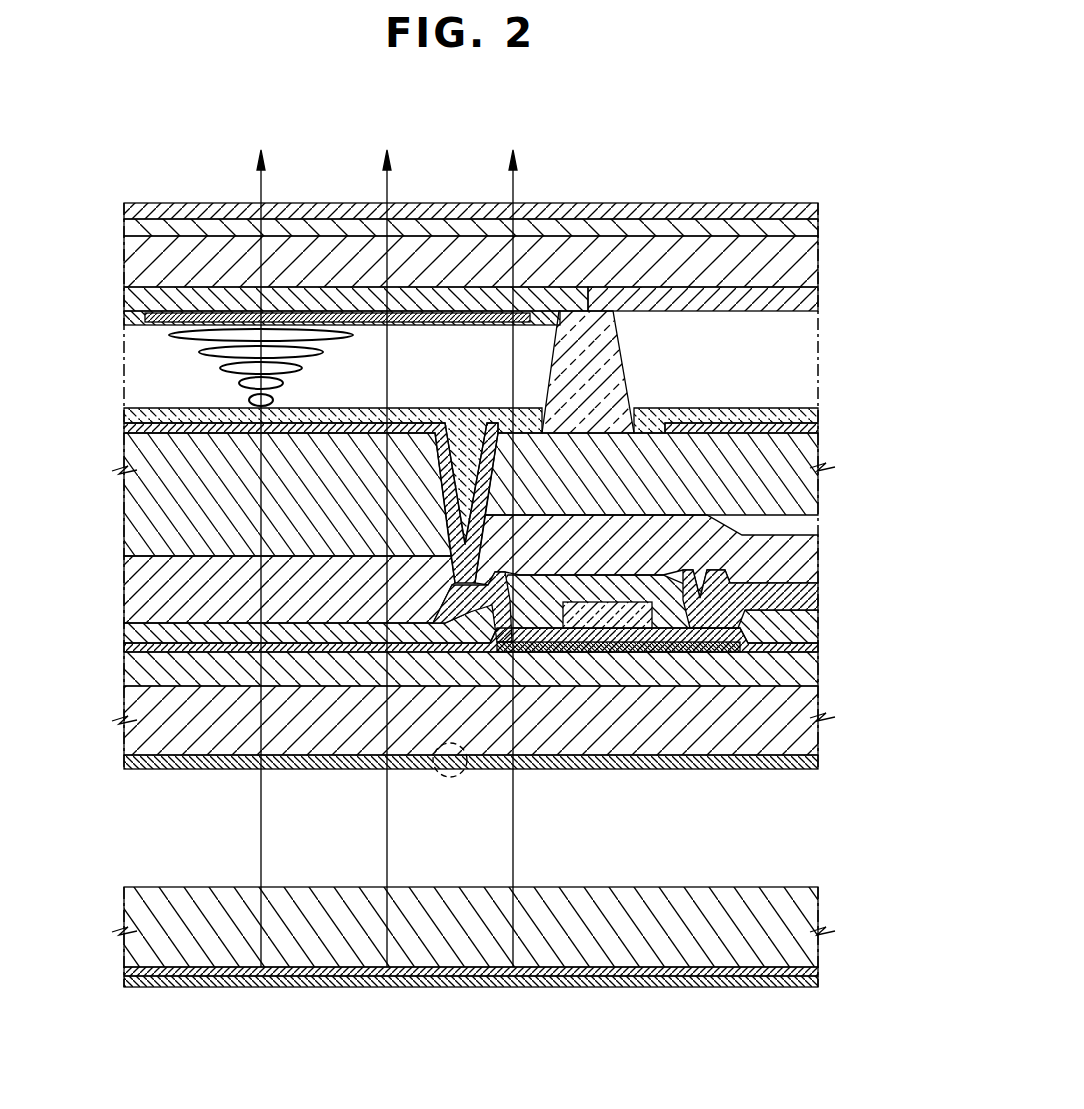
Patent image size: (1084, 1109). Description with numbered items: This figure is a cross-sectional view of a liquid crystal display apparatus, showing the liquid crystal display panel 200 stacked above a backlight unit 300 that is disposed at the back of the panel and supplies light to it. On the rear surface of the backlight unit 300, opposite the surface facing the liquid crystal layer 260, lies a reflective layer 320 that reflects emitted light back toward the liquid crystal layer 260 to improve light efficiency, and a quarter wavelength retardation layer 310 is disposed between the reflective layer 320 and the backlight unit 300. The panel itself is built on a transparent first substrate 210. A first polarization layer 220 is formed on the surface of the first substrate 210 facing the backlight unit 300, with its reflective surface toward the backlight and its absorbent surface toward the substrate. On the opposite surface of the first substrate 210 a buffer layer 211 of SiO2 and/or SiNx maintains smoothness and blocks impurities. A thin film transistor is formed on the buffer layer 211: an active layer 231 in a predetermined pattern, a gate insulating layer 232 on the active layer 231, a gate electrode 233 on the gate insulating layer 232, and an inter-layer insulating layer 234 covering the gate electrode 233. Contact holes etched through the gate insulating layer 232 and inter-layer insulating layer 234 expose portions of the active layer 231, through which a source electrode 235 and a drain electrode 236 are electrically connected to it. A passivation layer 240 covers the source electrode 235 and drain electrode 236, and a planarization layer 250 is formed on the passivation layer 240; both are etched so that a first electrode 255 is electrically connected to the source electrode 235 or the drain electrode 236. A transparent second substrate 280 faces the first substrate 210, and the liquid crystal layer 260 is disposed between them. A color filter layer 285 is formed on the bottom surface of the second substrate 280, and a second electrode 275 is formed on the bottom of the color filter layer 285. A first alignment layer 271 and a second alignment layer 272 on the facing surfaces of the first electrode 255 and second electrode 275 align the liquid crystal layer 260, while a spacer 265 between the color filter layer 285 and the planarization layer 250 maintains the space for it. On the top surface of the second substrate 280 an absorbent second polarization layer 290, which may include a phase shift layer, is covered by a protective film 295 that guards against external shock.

The liquid crystal display panel 200 is at (772, 165).
The first substrate 210 is at (805, 719).
The buffer layer 211 is at (805, 672).
The first polarization layer 220 is at (822, 762).
The active layer 231 is at (640, 652).
The gate insulating layer 232 is at (790, 640).
The gate electrode 233 is at (596, 630).
The inter-layer insulating layer 234 is at (812, 620).
The source electrode 235 is at (700, 612).
The drain electrode 236 is at (526, 615).
The passivation layer 240 is at (803, 543).
The planarization layer 250 is at (805, 463).
The first electrode 255 is at (126, 430).
The liquid crystal layer 260 is at (155, 367).
The spacer 265 is at (605, 367).
The first alignment layer 271 is at (126, 413).
The second alignment layer 272 is at (126, 318).
The second electrode 275 is at (437, 312).
The second substrate 280 is at (805, 263).
The color filter layer 285 is at (543, 300).
The second polarization layer 290 is at (810, 228).
The protective film 295 is at (806, 209).
The backlight unit 300 is at (805, 916).
The quarter wavelength retardation layer 310 is at (820, 971).
The reflective layer 320 is at (820, 983).